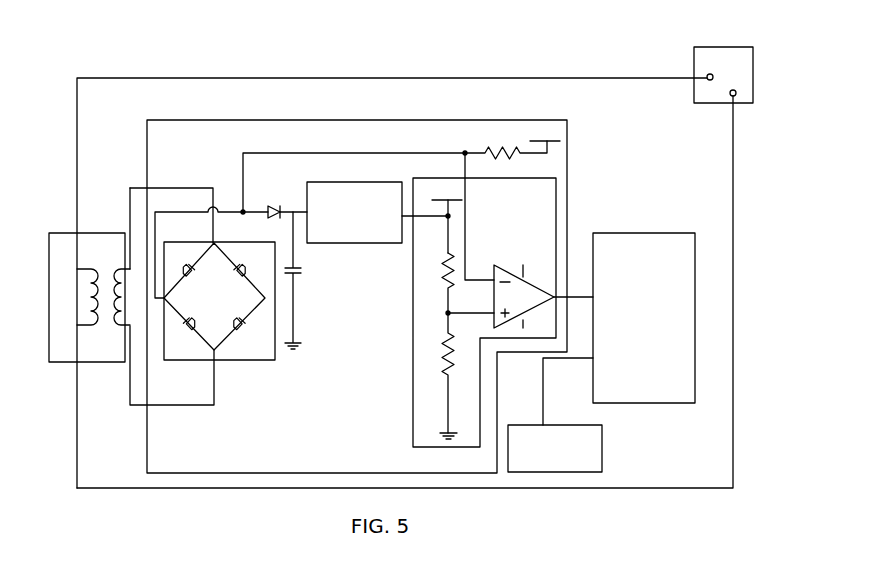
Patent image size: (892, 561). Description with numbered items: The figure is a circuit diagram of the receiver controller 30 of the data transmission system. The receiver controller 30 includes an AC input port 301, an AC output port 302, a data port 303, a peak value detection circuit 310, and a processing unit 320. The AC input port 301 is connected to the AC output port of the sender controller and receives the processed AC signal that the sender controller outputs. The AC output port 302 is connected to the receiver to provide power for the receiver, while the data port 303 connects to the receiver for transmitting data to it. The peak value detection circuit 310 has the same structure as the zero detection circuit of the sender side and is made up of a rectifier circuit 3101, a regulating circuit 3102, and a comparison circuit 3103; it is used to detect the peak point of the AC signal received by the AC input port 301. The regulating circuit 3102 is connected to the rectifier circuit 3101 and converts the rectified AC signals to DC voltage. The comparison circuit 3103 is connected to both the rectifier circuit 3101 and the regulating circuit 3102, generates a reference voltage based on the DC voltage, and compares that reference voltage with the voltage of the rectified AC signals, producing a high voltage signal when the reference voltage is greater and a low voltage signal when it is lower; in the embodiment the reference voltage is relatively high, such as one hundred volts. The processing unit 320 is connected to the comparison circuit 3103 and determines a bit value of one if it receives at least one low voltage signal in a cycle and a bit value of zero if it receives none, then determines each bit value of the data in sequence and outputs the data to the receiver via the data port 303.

The receiver controller 30 is at (445, 120).
The AC input port 301 is at (97, 233).
The AC output port 302 is at (733, 47).
The data port 303 is at (602, 452).
The peak value detection circuit 310 is at (147, 437).
The rectifier circuit 3101 is at (237, 362).
The regulating circuit 3102 is at (346, 182).
The comparison circuit 3103 is at (557, 205).
The processing unit 320 is at (621, 233).